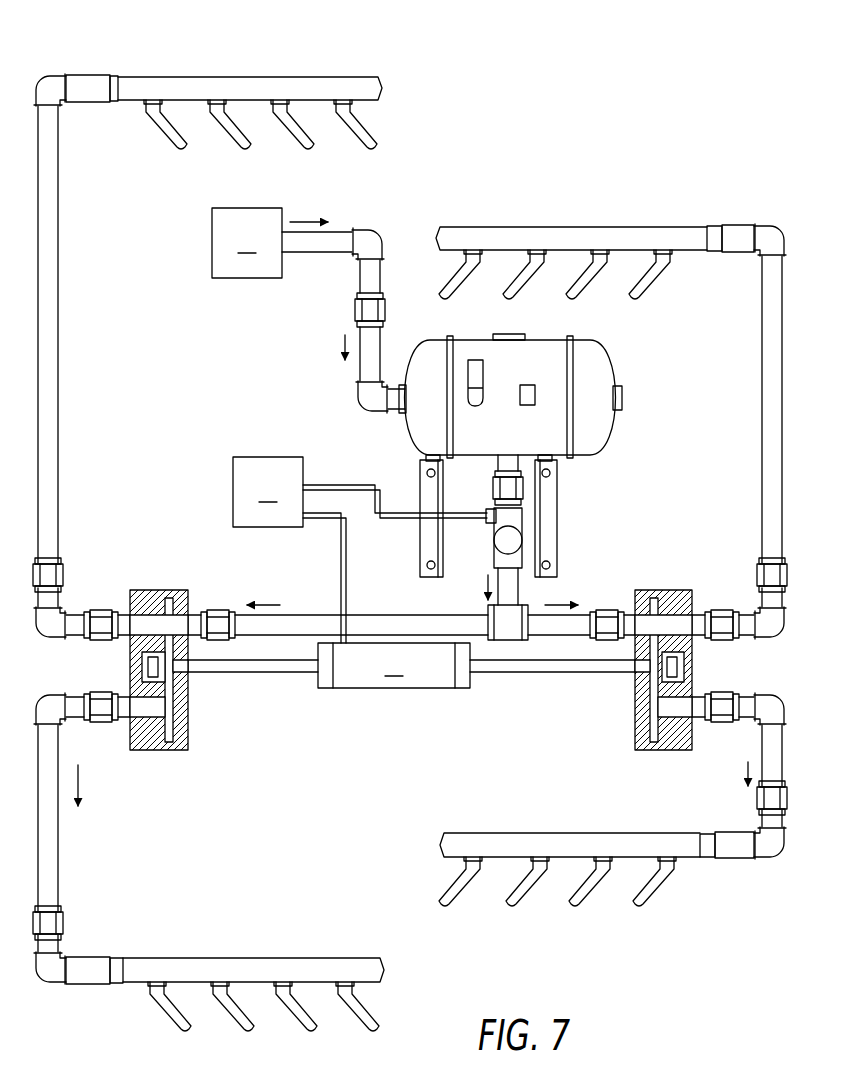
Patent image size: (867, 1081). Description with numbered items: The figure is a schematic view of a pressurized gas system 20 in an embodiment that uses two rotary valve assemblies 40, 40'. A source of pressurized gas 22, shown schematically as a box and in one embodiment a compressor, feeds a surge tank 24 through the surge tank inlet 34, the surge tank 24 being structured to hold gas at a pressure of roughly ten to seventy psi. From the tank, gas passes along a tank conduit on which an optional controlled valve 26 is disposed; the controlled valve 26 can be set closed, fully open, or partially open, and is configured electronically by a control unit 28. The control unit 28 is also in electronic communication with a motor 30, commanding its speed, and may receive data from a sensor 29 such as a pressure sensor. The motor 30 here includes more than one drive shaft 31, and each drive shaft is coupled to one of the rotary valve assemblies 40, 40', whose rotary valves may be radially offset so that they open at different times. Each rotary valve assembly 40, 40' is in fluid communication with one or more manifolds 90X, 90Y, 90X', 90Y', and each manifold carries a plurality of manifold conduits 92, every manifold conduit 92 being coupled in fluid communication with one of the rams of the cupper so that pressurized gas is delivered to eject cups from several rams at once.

The pressurized gas system 20 is at (408, 255).
The source of pressurized gas 22 is at (247, 243).
The surge tank 24 is at (602, 365).
The controlled valve 26 is at (494, 547).
The control unit 28 is at (360, 550).
The sensor 29 is at (490, 523).
The motor 30 is at (394, 665).
The drive shaft 31 is at (516, 670).
The surge tank inlet 34 is at (405, 384).
The rotary valve assembly 40 is at (665, 646).
The rotary valve assembly 40' is at (159, 646).
The manifold 90X is at (612, 849).
The manifold 90X' is at (209, 977).
The manifold 90Y is at (611, 240).
The manifold 90Y' is at (208, 90).
The manifold conduit 92 is at (424, 868).